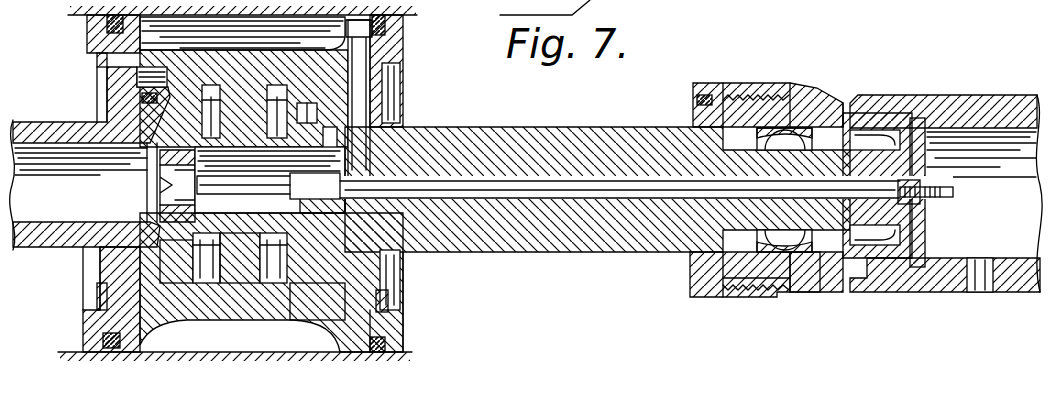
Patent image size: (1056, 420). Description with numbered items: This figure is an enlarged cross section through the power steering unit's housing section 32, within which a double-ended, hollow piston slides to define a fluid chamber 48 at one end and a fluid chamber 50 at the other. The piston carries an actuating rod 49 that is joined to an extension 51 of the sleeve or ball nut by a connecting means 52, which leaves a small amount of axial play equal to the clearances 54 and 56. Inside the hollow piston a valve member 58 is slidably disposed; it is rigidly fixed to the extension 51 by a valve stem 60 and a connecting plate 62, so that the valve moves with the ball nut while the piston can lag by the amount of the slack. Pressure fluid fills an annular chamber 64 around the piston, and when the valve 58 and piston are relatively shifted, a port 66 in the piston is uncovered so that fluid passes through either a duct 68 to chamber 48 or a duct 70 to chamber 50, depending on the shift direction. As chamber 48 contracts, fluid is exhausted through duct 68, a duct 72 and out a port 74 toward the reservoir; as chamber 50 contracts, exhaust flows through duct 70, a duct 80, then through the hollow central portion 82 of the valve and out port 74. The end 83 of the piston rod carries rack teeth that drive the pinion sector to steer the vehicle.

The housing section 32 is at (400, 354).
The fluid chamber 48 is at (78, 318).
The actuating rod 49 is at (570, 133).
The fluid chamber 50 is at (408, 318).
The extension of sleeve or ball nut 51 is at (975, 105).
The connecting means 52 is at (795, 83).
The clearance 54 is at (743, 252).
The clearance 56 is at (820, 255).
The valve member 58 is at (382, 260).
The valve stem 60 is at (572, 190).
The connecting plate 62 is at (927, 225).
The annular chamber 64 is at (273, 335).
The port 66 is at (240, 250).
The duct 68 is at (200, 288).
The duct 70 is at (292, 293).
The duct 72 is at (177, 287).
The port 74 is at (65, 248).
The duct 80 is at (380, 284).
The hollow central portion of valve 82 is at (257, 208).
The end of piston rod 83 is at (42, 122).